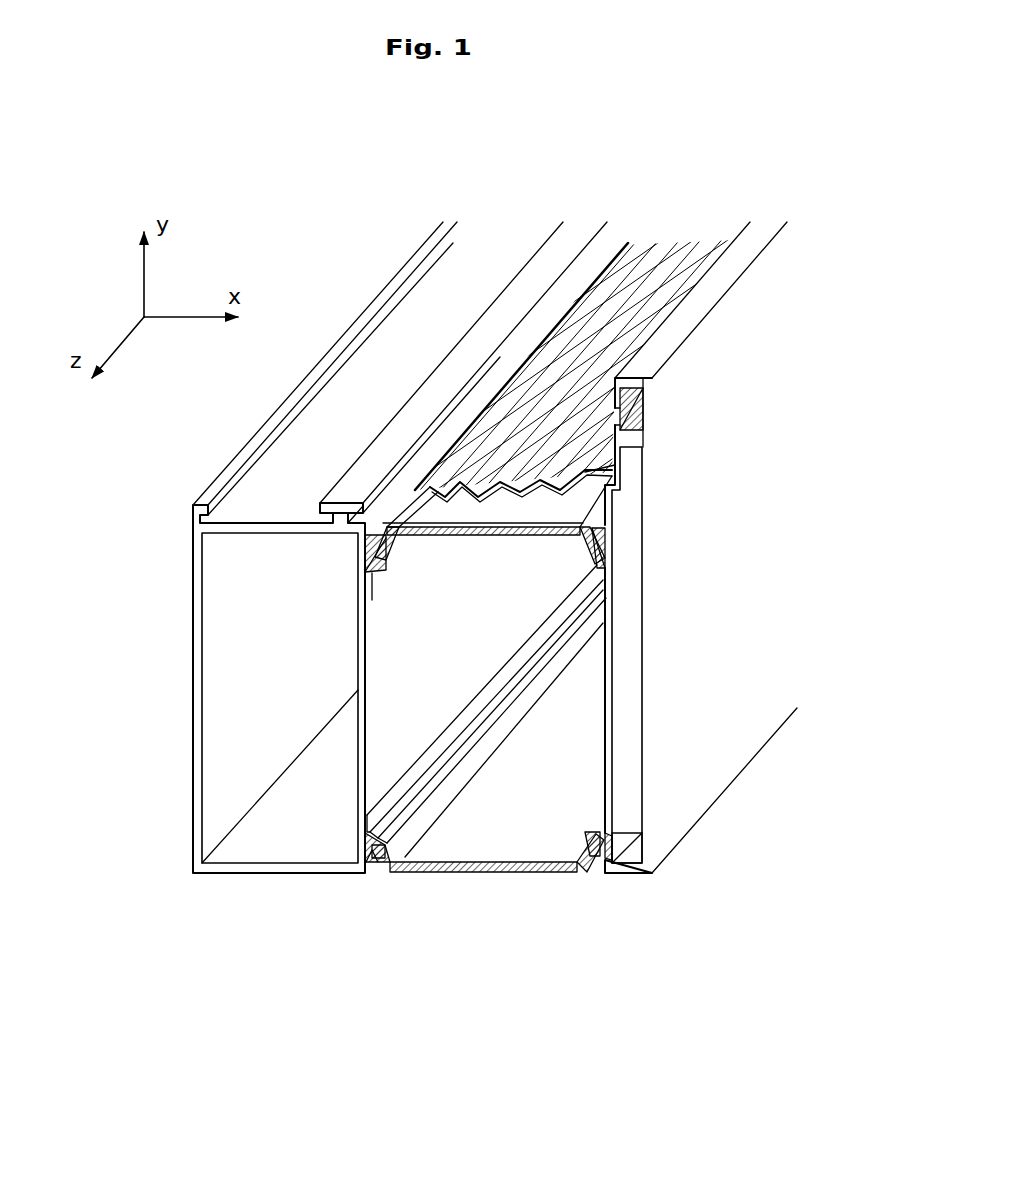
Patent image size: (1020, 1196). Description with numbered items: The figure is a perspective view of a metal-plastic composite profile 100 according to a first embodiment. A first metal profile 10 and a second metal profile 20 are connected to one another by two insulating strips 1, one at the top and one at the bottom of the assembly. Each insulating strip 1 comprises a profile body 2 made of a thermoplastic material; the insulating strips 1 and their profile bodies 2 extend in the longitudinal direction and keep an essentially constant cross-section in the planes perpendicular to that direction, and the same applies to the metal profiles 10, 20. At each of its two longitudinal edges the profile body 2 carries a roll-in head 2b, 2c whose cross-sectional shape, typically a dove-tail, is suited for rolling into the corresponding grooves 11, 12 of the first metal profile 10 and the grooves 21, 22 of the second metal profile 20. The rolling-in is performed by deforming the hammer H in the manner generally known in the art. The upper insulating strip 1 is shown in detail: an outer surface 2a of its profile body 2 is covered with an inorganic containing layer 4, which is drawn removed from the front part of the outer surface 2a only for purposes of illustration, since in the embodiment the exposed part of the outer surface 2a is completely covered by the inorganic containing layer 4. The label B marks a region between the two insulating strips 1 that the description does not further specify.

The insulating strip 1 is at (506, 706).
The profile body 2 is at (535, 537).
The outer surface 2a is at (584, 494).
The roll-in head 2b is at (368, 860).
The roll-in head 2c is at (598, 860).
The inorganic containing layer 4 is at (647, 285).
The first metal profile 10 is at (276, 674).
The groove 11 is at (362, 557).
The groove 12 is at (360, 846).
The second metal profile 20 is at (751, 622).
The groove 21 is at (606, 541).
The groove 22 is at (624, 842).
The metal-plastic composite profile 100 is at (276, 913).
The bar B is at (381, 812).
The hammer H is at (372, 866).